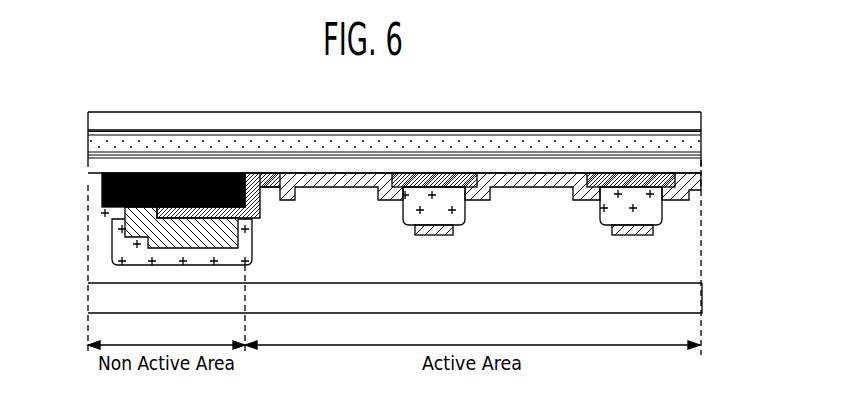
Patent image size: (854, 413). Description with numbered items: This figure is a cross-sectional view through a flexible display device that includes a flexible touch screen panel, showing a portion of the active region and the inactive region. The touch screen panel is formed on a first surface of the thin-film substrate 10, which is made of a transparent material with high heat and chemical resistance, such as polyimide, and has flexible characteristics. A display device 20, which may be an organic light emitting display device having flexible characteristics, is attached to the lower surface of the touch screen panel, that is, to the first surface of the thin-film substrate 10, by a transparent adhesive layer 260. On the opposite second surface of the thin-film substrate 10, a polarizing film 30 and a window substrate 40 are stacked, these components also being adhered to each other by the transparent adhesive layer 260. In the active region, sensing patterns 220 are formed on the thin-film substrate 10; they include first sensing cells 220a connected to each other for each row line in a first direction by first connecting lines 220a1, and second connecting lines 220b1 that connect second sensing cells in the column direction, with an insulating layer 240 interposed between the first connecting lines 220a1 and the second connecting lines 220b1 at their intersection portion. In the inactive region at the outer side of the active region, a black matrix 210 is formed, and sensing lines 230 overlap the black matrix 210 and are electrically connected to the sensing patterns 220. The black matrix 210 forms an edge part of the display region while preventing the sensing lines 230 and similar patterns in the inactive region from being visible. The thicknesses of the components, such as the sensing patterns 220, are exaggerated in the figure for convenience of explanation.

The window substrate 40 is at (97, 116).
The transparent adhesive layer 260 is at (97, 133).
The polarizing film 30 is at (97, 143).
The thin-film substrate 10 is at (97, 166).
The black matrix 210 is at (100, 195).
The sensing lines 230 is at (112, 219).
The insulating layer 240 is at (125, 251).
The display device 20 is at (90, 307).
The sensing patterns 220 is at (546, 205).
The first connecting lines 220a1 is at (675, 178).
The first sensing cells 220a is at (662, 195).
The second connecting lines 220b1 is at (653, 228).